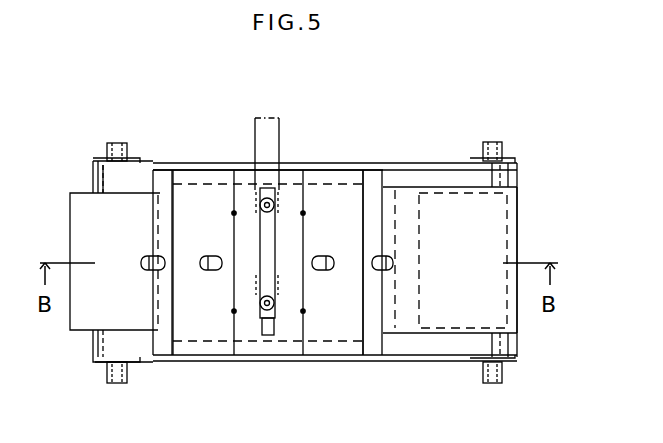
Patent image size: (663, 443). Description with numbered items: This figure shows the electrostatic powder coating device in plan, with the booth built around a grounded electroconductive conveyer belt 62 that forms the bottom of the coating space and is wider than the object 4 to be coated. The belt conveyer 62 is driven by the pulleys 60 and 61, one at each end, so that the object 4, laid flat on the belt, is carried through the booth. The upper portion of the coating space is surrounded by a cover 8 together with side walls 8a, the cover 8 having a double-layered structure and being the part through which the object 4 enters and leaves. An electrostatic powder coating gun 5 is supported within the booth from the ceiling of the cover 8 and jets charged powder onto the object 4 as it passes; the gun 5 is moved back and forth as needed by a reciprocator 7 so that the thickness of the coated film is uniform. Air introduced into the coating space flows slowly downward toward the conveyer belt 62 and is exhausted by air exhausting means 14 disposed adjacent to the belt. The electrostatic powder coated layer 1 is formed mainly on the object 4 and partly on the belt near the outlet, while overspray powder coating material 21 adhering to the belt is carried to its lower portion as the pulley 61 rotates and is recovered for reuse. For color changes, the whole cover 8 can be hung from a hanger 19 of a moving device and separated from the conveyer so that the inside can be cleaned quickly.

The electrostatic powder coated layer 1 is at (497, 215).
The object to be coated 4 is at (75, 217).
The electrostatic powder coating gun 5 is at (267, 337).
The reciprocator 7 is at (272, 149).
The cover 8 is at (349, 192).
The side walls 8a is at (203, 172).
The air exhausting means 14 is at (163, 180).
The hanger 19 is at (303, 188).
The overspray powder coating material 21 is at (515, 247).
The pulley 60 is at (138, 158).
The pulley 61 is at (507, 158).
The electroconductive conveyer belt 62 is at (147, 348).